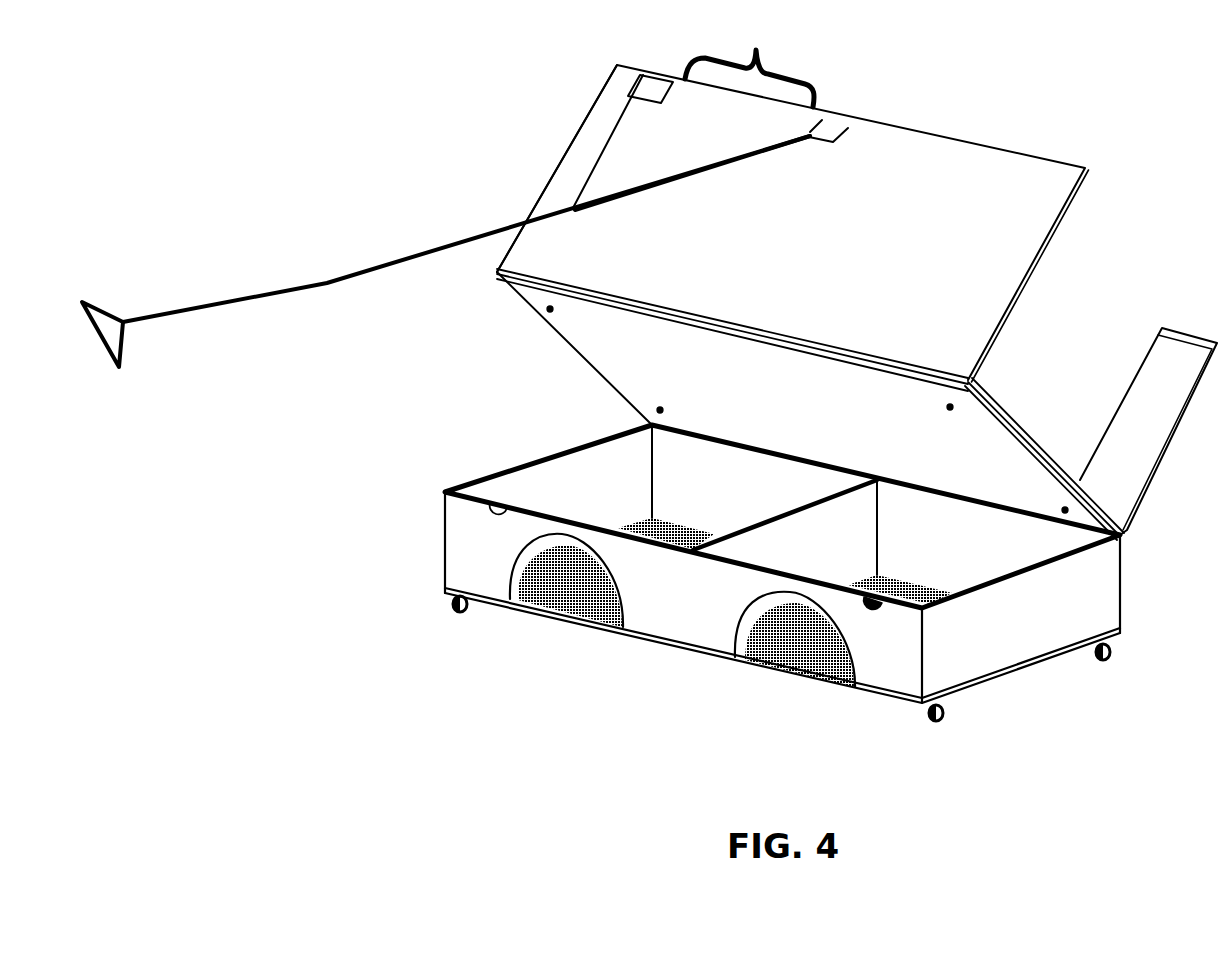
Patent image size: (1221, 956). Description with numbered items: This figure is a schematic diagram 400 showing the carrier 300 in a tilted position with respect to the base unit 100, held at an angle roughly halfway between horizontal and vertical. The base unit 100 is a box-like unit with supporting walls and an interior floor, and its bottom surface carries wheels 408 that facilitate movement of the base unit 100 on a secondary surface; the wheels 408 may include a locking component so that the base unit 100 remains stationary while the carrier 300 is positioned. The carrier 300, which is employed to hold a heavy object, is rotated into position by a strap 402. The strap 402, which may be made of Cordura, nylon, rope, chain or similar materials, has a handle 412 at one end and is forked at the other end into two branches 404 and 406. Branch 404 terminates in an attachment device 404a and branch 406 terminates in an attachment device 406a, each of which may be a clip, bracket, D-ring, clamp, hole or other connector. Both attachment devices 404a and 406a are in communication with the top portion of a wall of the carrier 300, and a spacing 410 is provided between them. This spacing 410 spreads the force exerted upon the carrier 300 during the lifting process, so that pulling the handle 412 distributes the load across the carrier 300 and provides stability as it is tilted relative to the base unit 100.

The base unit 100 is at (651, 682).
The carrier 300 is at (1103, 241).
The schematic diagram 400 is at (501, 187).
The strap 402 is at (415, 250).
The branch 404 is at (618, 143).
The attachment device 404a is at (653, 83).
The branch 406 is at (710, 168).
The attachment device 406a is at (840, 110).
The wheels 408 is at (452, 612).
The spacing 410 is at (756, 52).
The handle 412 is at (103, 307).